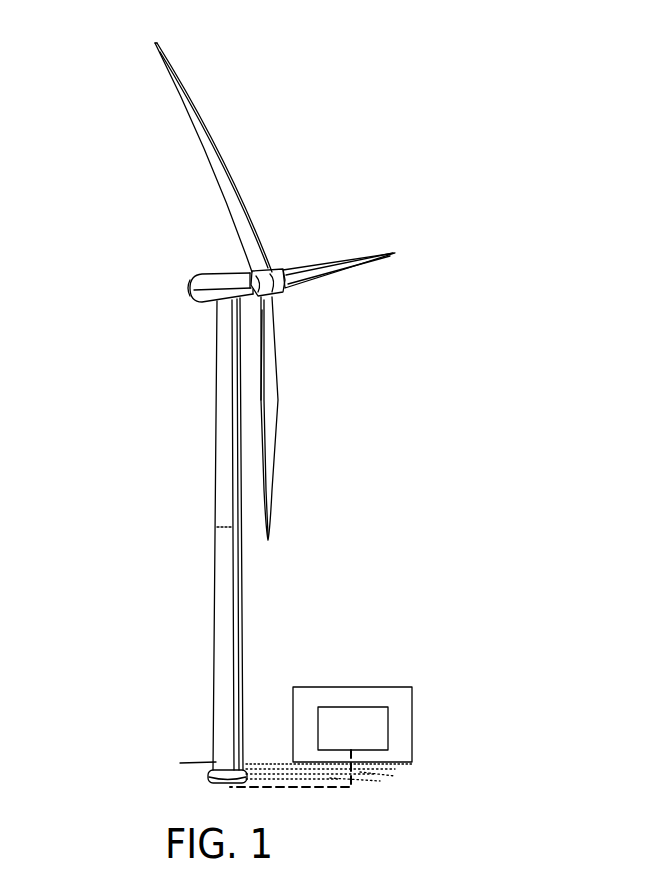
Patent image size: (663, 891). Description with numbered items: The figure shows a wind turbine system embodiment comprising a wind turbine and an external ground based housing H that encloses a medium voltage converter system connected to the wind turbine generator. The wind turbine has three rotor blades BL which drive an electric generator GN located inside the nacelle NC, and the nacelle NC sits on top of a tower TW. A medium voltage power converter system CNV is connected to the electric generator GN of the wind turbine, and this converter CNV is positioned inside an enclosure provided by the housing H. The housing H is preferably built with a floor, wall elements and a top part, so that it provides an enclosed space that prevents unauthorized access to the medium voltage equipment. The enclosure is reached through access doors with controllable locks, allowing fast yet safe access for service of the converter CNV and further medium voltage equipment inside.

The nacelle NC is at (226, 277).
The electric generator GN is at (164, 293).
The rotor blades BL is at (271, 436).
The tower TW is at (229, 663).
The medium voltage power converter system CNV is at (353, 728).
The housing H is at (424, 664).